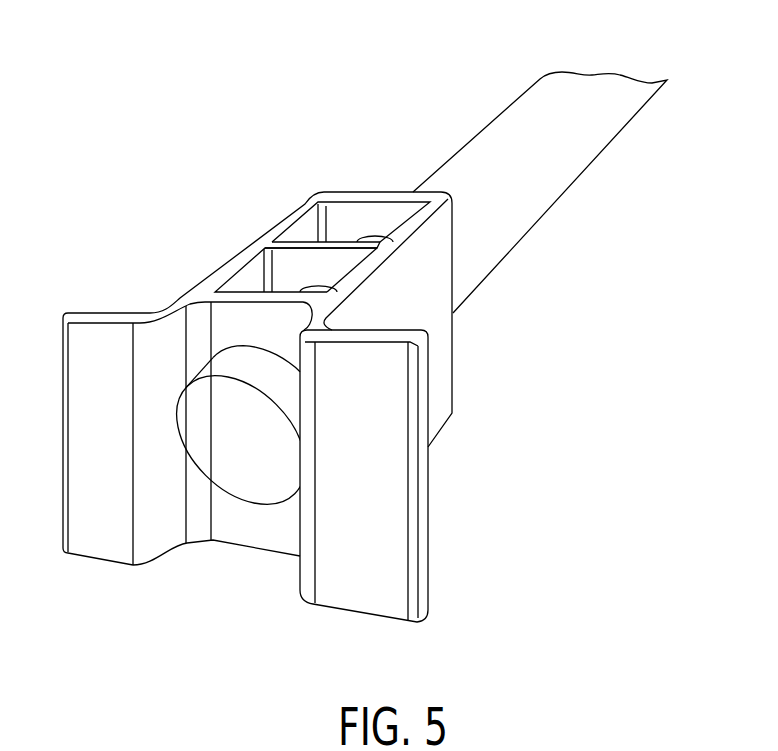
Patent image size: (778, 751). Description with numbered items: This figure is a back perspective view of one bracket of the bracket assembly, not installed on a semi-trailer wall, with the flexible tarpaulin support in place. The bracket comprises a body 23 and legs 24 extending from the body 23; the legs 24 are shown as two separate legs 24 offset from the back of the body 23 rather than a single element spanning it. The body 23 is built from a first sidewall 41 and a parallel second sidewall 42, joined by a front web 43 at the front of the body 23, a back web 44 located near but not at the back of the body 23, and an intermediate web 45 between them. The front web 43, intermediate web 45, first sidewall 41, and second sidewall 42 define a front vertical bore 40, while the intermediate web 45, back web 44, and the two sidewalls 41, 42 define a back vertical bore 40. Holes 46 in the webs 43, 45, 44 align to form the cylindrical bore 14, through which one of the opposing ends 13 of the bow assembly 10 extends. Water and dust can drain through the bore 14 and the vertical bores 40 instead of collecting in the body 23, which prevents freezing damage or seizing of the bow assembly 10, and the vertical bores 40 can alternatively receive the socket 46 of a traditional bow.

The bow assembly 10 is at (567, 97).
The ends of the bow assembly 13 is at (200, 413).
The cylindrical bore 14 is at (262, 347).
The body 23 is at (438, 335).
The legs 24 is at (93, 543).
The vertical bores 40 is at (287, 267).
The first sidewall 41 is at (303, 203).
The second sidewall 42 is at (428, 213).
The front web 43 is at (388, 212).
The back web 44 is at (278, 535).
The intermediate web 45 is at (340, 290).
The holes 46 is at (232, 370).